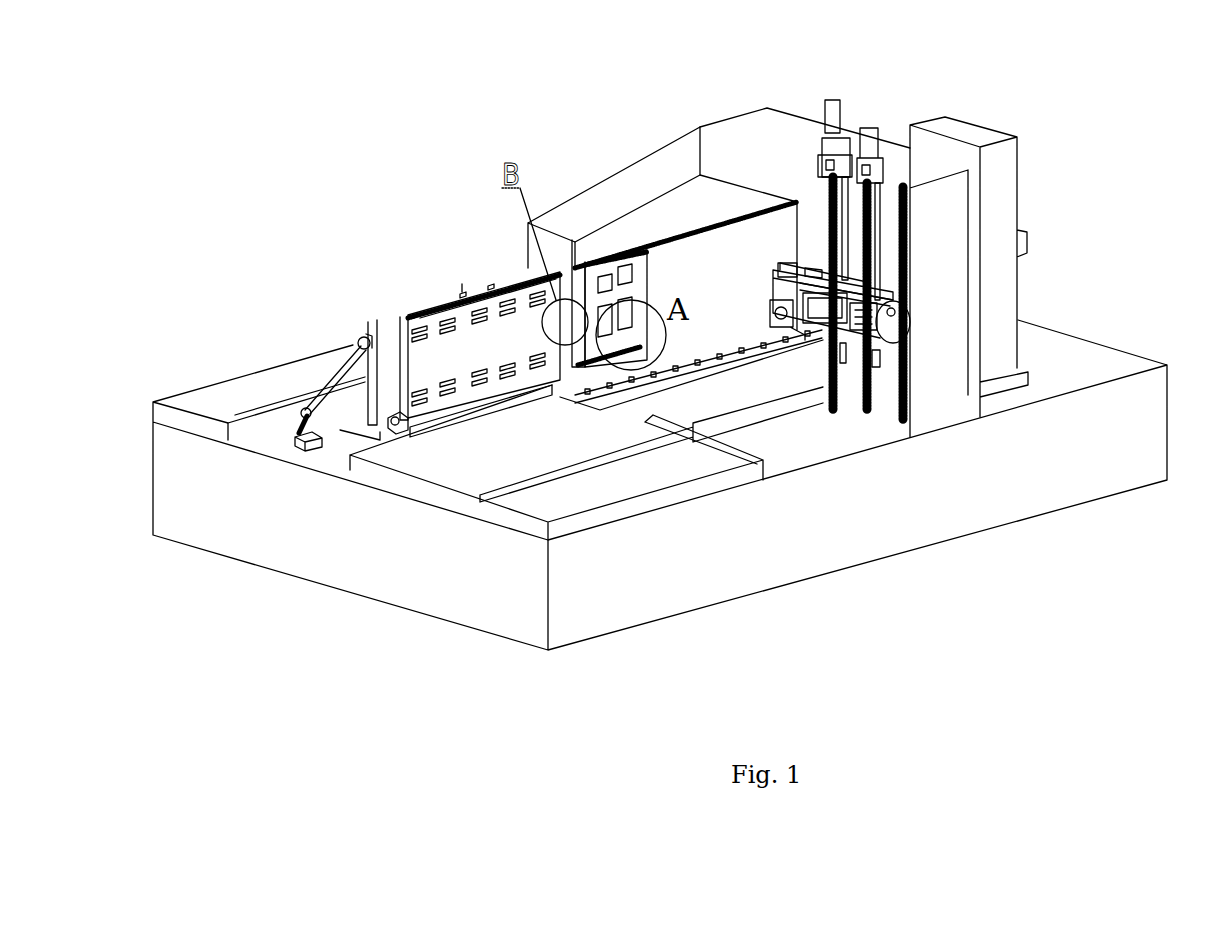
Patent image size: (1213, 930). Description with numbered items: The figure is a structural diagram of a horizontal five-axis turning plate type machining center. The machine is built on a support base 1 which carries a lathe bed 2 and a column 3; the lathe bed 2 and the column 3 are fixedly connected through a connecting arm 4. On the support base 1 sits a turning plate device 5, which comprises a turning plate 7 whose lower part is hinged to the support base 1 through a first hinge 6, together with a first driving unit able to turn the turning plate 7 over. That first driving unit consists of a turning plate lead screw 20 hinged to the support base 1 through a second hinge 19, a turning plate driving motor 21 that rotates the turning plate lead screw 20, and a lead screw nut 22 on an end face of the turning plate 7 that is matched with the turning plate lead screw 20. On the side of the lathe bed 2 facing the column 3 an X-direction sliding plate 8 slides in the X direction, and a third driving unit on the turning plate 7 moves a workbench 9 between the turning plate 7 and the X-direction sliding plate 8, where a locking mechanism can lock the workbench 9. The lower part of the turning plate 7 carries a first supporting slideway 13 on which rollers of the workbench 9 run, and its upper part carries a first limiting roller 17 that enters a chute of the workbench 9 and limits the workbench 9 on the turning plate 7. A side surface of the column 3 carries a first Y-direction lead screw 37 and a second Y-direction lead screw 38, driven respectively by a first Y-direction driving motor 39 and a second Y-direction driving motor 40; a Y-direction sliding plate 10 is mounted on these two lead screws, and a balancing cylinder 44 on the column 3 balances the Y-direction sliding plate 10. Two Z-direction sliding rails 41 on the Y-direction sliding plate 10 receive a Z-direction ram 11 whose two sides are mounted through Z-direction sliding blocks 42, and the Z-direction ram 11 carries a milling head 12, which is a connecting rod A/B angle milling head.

The support base 1 is at (990, 495).
The lathe bed 2 is at (637, 188).
The column 3 is at (1007, 318).
The connecting arm 4 is at (715, 120).
The turning plate device 5 is at (463, 290).
The first hinge 6 is at (393, 412).
The turning plate 7 is at (413, 307).
The X-direction sliding plate 8 is at (673, 230).
The workbench 9 is at (717, 242).
The Y-direction sliding plate 10 is at (902, 290).
The Z-direction ram 11 is at (890, 302).
The milling head 12 is at (793, 326).
The first supporting slideway 13 is at (437, 402).
The first limiting roller 17 is at (490, 290).
The second hinge 19 is at (293, 422).
The turning plate lead screw 20 is at (328, 385).
The turning plate driving motor 21 is at (302, 407).
The lead screw nut 22 is at (358, 336).
The first Y-direction lead screw 37 is at (845, 247).
The second Y-direction lead screw 38 is at (877, 225).
The first Y-direction driving motor 39 is at (832, 100).
The second Y-direction driving motor 40 is at (878, 124).
The Z-direction sliding rails 41 is at (860, 282).
The Z-direction sliding blocks 42 is at (805, 263).
The balancing cylinder 44 is at (840, 153).